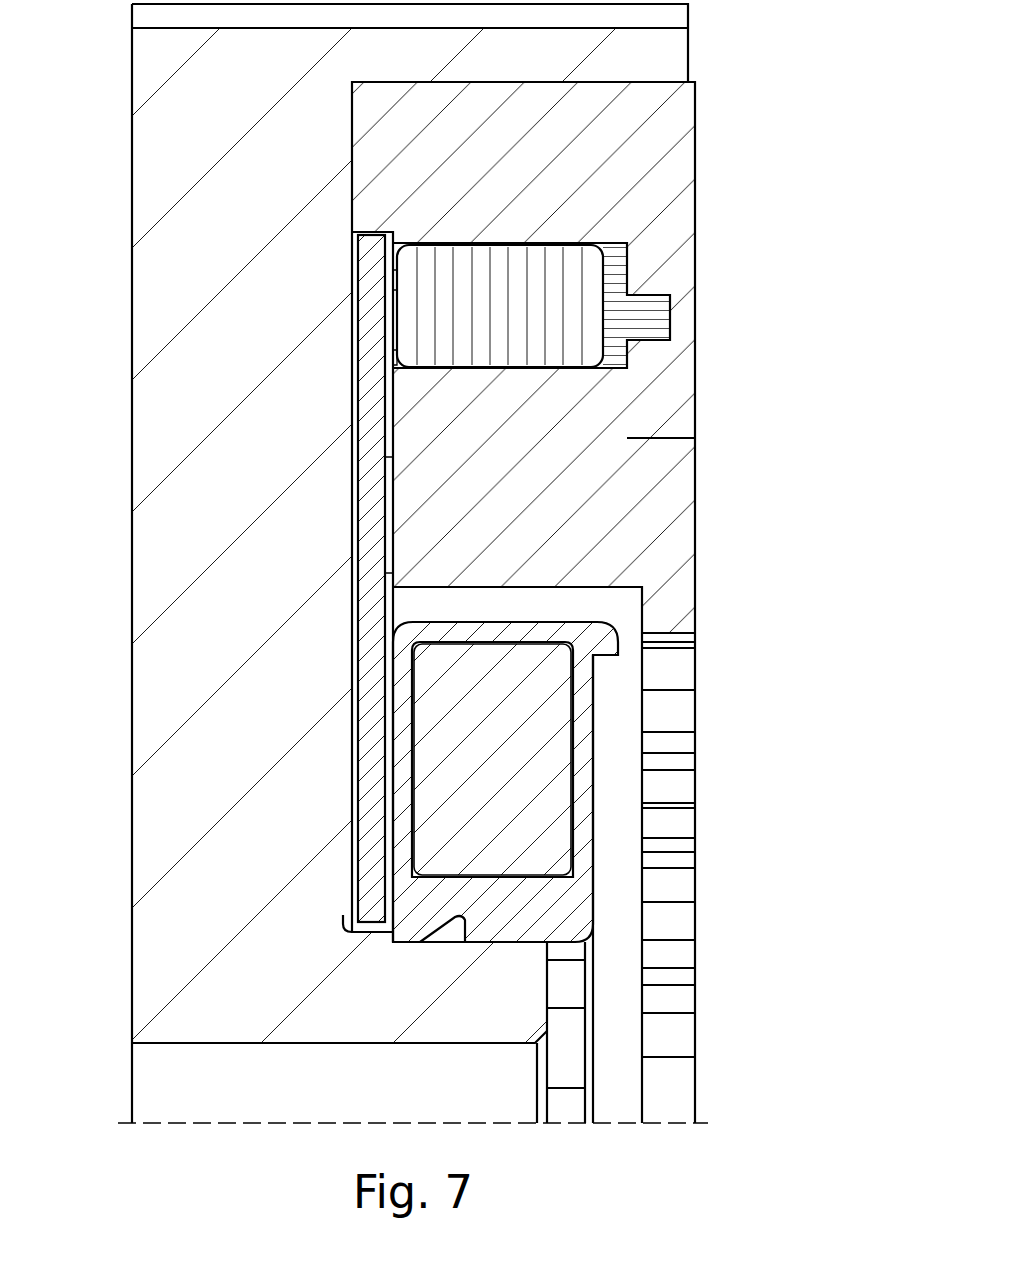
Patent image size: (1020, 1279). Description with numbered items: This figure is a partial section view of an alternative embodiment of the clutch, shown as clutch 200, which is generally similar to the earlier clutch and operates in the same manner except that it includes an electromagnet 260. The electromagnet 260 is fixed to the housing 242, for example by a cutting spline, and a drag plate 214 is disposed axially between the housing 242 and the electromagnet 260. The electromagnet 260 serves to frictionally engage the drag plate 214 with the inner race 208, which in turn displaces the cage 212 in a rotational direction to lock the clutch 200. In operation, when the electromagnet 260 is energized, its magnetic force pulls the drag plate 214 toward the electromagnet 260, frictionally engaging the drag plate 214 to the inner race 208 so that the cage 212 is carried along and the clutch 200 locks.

The alternative embodiment of the clutch 200 is at (814, 86).
The inner race 208 is at (667, 535).
The cage 212 is at (615, 283).
The drag plate 214 is at (373, 653).
The housing 242 is at (165, 863).
The electromagnet 260 is at (590, 740).